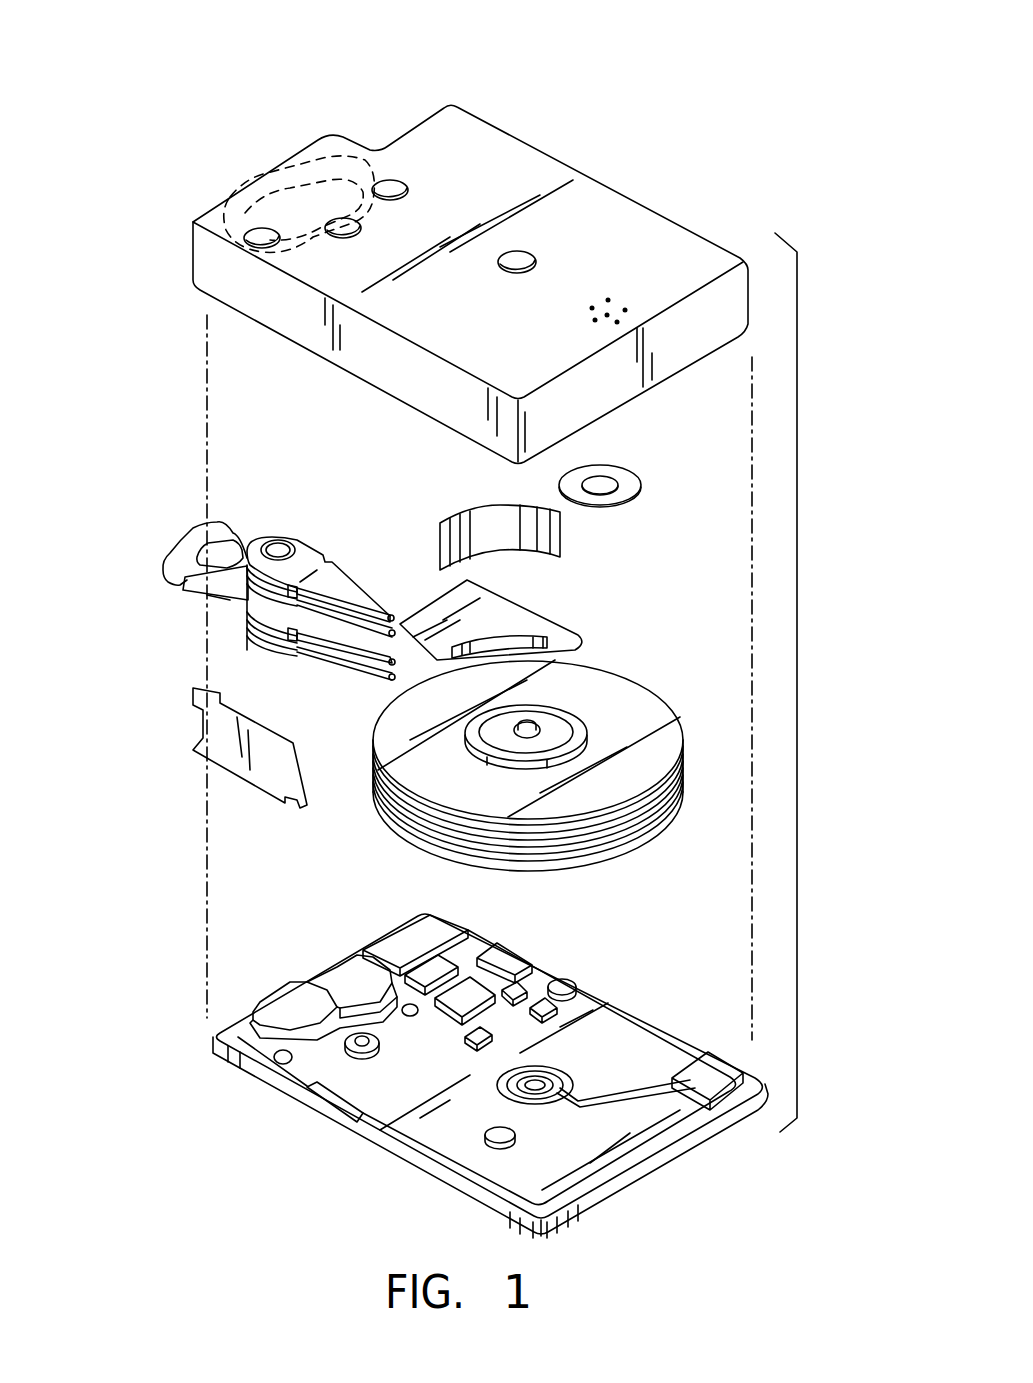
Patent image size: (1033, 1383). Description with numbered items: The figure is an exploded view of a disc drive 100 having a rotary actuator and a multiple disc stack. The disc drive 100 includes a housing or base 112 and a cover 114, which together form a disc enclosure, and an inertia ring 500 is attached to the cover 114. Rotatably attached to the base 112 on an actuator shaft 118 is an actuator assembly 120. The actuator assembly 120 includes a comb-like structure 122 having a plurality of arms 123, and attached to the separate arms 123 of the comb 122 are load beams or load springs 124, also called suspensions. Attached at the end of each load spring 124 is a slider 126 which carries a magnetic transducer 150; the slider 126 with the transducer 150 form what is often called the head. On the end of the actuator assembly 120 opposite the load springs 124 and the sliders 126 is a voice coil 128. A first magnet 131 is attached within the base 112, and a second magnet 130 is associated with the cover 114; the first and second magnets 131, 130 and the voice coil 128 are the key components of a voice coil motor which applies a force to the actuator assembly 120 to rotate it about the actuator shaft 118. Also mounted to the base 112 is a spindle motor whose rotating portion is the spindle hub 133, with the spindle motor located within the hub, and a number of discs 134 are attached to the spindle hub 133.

The disc drive 100 is at (609, 90).
The base 112 is at (657, 1040).
The cover 114 is at (632, 220).
The actuator shaft 118 is at (278, 545).
The actuator assembly 120 is at (230, 597).
The comb-like structure 122 is at (300, 650).
The arms 123 is at (332, 558).
The load beams or load springs 124 is at (348, 593).
The slider 126 is at (392, 616).
The voice coil 128 is at (185, 550).
The second magnet 130 is at (304, 168).
The first magnet 131 is at (275, 1002).
The spindle hub 133 is at (533, 722).
The discs 134 is at (653, 708).
The magnetic transducer 150 is at (410, 622).
The inertia ring 500 is at (627, 473).